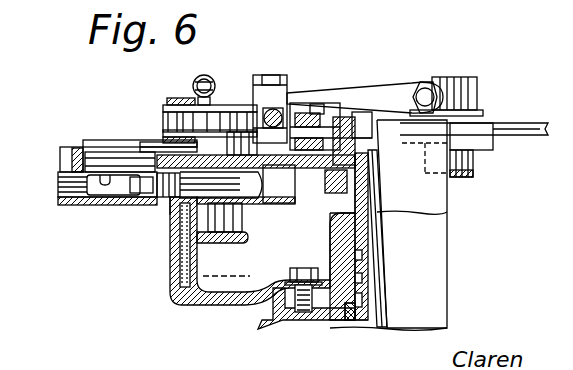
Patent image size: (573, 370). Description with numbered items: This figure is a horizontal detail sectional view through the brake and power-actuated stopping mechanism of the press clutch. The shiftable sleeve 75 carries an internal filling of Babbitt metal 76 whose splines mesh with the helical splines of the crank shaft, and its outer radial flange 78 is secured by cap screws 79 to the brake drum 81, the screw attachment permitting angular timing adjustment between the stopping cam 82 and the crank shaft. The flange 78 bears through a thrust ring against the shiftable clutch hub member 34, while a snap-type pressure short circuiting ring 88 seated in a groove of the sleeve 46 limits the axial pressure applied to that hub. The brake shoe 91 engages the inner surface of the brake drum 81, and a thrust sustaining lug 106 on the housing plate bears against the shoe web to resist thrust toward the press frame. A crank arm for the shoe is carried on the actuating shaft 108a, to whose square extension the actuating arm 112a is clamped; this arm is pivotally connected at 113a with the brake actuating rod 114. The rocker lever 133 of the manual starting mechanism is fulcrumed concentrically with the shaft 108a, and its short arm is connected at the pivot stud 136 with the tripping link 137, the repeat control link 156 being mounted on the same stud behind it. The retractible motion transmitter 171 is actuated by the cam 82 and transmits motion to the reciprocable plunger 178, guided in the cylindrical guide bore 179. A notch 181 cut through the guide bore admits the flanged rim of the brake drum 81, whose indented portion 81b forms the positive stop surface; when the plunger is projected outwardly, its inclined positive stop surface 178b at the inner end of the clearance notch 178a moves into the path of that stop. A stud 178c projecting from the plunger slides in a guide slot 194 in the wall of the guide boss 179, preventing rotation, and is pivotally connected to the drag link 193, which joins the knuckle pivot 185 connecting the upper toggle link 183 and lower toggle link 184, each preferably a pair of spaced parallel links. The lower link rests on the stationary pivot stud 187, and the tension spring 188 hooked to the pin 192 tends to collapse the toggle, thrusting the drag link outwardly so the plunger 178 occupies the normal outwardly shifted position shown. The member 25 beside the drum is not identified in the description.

The frame 25 is at (448, 264).
The shiftable clutch hub member 34 is at (270, 332).
The sleeve 46 is at (355, 313).
The shiftable sleeve 75 is at (353, 228).
The Babbitt metal filling 76 is at (350, 260).
The outer radial flange 78 is at (340, 322).
The cap screws 79 is at (302, 313).
The brake drum 81 is at (172, 284).
The indented portion of drum flange 81b is at (165, 205).
The cam 82 is at (370, 195).
The pressure short circuiting ring 88 is at (353, 324).
The brake shoe 91 is at (203, 277).
The thrust sustaining lug 106 is at (248, 240).
The actuating shaft 108a is at (454, 77).
The actuating arm 112a is at (352, 90).
The pivotal connection 113a is at (271, 86).
The brake actuating rod 114 is at (303, 108).
The rocker lever 133 is at (519, 125).
The pivot stud 136 is at (320, 100).
The tripping link 137 is at (323, 117).
The repeat control link 156 is at (370, 168).
The retractible motion transmitter 171 is at (332, 193).
The reciprocable plunger 178 is at (266, 200).
The clearance notch 178a is at (110, 182).
The positive stop surface 178b is at (155, 183).
The stud 178c is at (60, 163).
The cylindrical guide bore 179 is at (70, 205).
The notch 181 is at (157, 212).
The upper toggle link 183 is at (163, 130).
The lower toggle link 184 is at (218, 108).
The knuckle pivot 185 is at (185, 97).
The stationary pivot stud 187 is at (250, 90).
The tension spring 188 is at (210, 66).
The pin 192 is at (186, 144).
The drag link 193 is at (161, 154).
The guide slot 194 is at (62, 168).